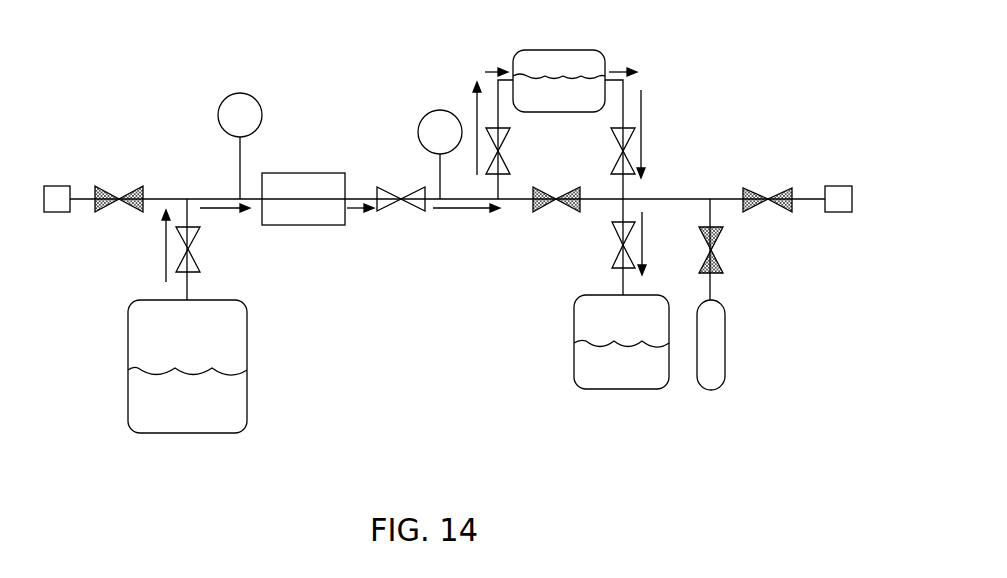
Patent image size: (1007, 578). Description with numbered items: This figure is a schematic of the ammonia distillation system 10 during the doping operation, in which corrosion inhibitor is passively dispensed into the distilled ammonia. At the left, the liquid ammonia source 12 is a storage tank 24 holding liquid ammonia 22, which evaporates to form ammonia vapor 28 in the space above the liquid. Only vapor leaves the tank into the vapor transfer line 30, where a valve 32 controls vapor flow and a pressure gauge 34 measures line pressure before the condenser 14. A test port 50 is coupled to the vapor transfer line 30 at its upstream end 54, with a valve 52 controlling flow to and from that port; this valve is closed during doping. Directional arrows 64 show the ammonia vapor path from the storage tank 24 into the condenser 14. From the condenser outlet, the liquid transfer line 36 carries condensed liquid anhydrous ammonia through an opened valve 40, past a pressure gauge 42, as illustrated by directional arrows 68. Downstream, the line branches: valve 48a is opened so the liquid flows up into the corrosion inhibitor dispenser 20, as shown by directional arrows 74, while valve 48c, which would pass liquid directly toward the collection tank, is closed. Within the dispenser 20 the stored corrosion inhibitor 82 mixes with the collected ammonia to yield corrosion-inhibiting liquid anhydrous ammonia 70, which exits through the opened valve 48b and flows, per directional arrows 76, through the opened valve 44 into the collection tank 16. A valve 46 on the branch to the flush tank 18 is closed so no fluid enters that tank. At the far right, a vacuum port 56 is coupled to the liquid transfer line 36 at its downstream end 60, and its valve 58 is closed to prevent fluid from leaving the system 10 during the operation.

The system 10 is at (145, 102).
The liquid ammonia source 12 is at (247, 343).
The condenser 14 is at (300, 173).
The collection tank 16 is at (574, 360).
The flush tank 18 is at (725, 344).
The corrosion inhibitor dispenser 20 is at (558, 50).
The liquid ammonia 22 is at (204, 422).
The storage tank 24 is at (128, 396).
The ammonia vapor 28 is at (204, 344).
The vapor transfer line 30 is at (232, 197).
The valve 32 is at (200, 238).
The pressure gauge 34 is at (263, 119).
The liquid transfer line 36 is at (355, 197).
The valve 40 is at (397, 212).
The pressure gauge 42 is at (418, 131).
The valve 44 is at (612, 233).
The valve 46 is at (722, 250).
The valve 48a is at (506, 145).
The valve 48b is at (612, 138).
The valve 48c is at (551, 188).
The test port 50 is at (55, 212).
The valve 52 is at (112, 212).
The upstream end 54 is at (102, 248).
The vacuum port 56 is at (840, 212).
The valve 58 is at (781, 212).
The downstream end 60 is at (825, 262).
The directional arrows 64 is at (165, 258).
The directional arrows 68 is at (350, 212).
The corrosion-inhibiting liquid anhydrous ammonia 70 is at (637, 375).
The directional arrows 74 is at (485, 72).
The directional arrows 76 is at (625, 72).
The corrosion inhibitor 82 is at (572, 109).